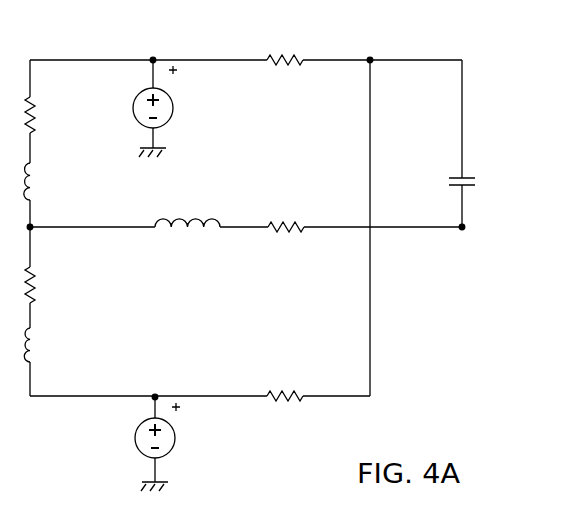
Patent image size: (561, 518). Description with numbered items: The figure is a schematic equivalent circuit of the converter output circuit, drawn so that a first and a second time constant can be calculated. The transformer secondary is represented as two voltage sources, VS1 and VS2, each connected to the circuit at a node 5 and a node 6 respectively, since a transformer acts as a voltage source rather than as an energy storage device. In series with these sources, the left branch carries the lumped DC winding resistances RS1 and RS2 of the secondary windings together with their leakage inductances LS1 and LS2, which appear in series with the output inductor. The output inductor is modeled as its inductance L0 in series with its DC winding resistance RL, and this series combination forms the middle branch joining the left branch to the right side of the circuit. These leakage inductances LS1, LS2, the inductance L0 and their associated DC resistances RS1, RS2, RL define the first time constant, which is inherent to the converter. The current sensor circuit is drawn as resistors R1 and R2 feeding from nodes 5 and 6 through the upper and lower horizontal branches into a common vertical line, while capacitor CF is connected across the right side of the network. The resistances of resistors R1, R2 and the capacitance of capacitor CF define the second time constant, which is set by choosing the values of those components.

The node 5 is at (153, 60).
The node 6 is at (155, 397).
The resistor R1 is at (285, 41).
The resistor R2 is at (285, 380).
The parasitic resistance of output inductor RL is at (282, 209).
The output inductor L0 is at (187, 207).
The capacitor CF is at (476, 179).
The parasitic resistance of secondary winding RS1 is at (50, 115).
The leakage inductance of secondary winding LS1 is at (48, 181).
The parasitic resistance of secondary winding RS2 is at (50, 284).
The leakage inductance of secondary winding LS2 is at (48, 346).
The voltage source VS1 is at (176, 108).
The voltage source VS2 is at (179, 444).